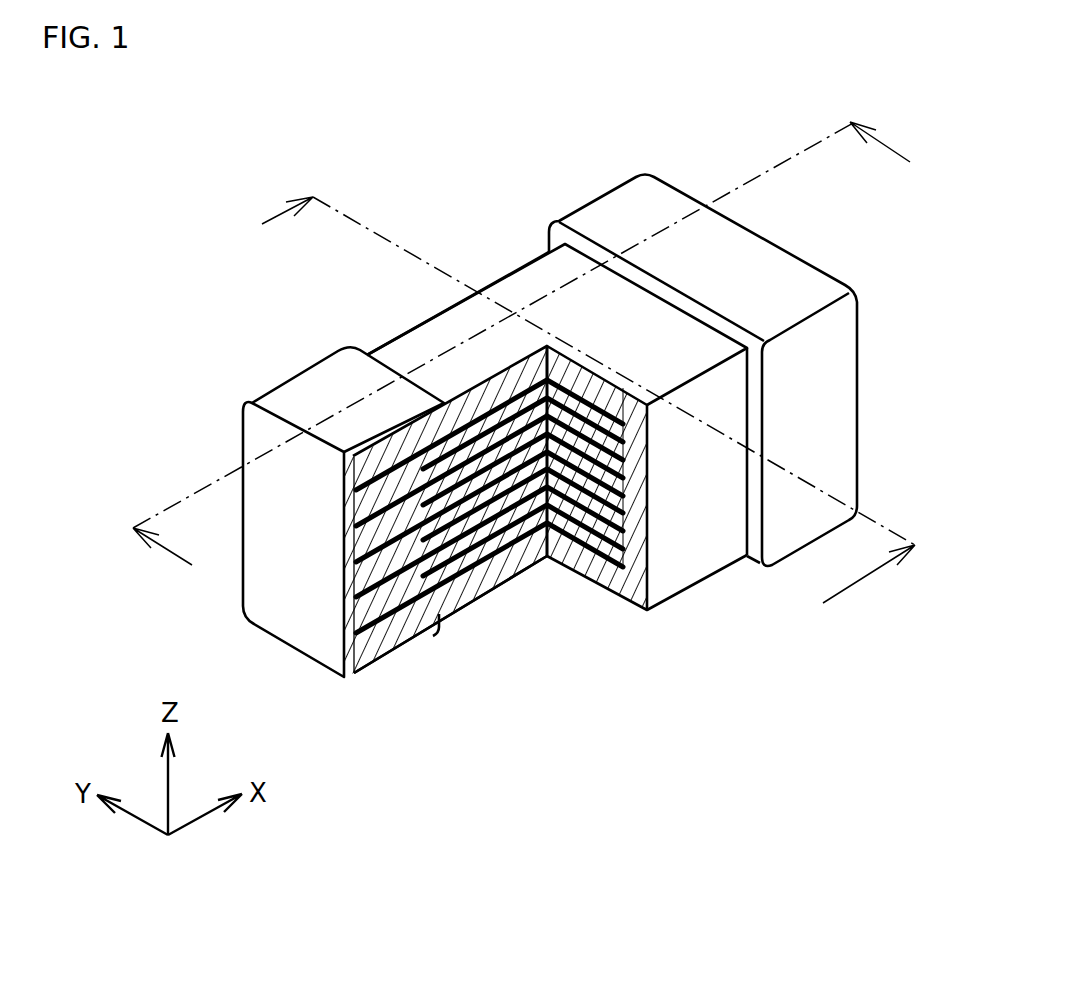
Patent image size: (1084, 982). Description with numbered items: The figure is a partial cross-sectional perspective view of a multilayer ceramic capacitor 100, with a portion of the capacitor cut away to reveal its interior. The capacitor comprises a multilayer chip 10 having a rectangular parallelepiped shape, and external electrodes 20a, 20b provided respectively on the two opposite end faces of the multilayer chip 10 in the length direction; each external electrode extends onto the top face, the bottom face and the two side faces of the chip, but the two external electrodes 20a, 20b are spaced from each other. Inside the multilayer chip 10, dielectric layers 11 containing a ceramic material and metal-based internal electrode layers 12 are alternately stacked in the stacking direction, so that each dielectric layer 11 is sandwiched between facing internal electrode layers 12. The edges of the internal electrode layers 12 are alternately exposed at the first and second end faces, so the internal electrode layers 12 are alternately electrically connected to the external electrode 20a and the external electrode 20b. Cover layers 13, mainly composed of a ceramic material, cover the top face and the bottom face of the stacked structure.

The multilayer ceramic capacitor 100 is at (960, 105).
The multilayer chip 10 is at (515, 475).
The dielectric layer 11 is at (497, 580).
The internal electrode layer 12 is at (512, 520).
The cover layer 13 is at (515, 290).
The external electrode 20a is at (272, 380).
The external electrode 20b is at (605, 213).